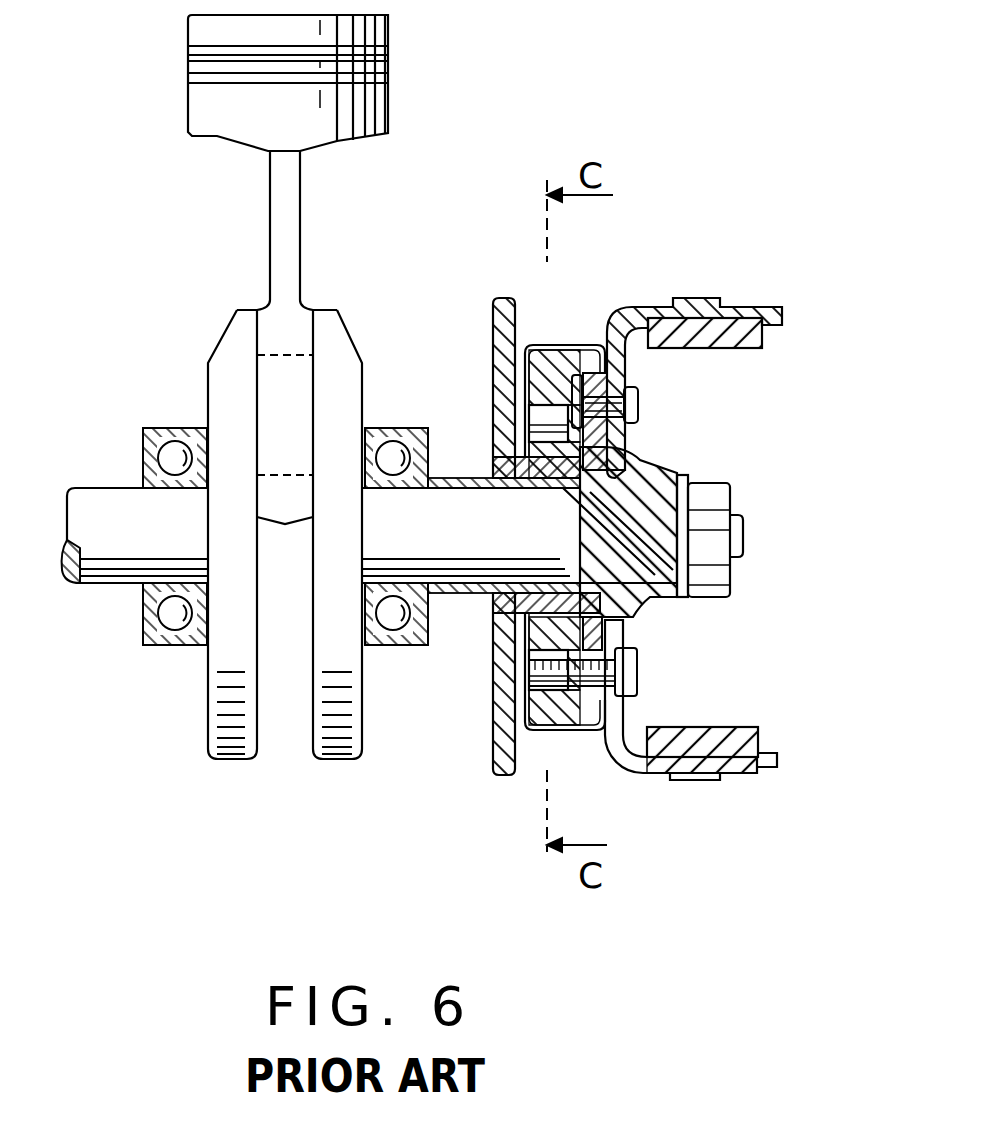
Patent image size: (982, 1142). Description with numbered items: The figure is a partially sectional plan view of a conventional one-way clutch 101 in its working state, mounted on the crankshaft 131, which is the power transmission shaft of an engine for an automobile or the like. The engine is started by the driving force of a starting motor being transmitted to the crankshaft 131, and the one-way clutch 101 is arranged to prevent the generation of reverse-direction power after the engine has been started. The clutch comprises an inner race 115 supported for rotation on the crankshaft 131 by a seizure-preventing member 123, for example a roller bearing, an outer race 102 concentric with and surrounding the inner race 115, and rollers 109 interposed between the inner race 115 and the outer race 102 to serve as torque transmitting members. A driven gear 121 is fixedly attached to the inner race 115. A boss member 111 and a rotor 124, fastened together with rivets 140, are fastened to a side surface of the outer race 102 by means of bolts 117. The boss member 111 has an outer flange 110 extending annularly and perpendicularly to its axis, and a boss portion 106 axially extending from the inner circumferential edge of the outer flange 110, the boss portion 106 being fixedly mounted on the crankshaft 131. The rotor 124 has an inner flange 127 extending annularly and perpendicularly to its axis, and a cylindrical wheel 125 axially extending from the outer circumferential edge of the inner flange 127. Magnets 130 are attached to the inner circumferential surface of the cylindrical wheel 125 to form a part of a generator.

The one-way clutch 101 is at (547, 327).
The outer race 102 is at (607, 370).
The boss portion 106 is at (640, 467).
The rollers 109 is at (537, 418).
The outer flange 110 is at (600, 428).
The boss member 111 is at (585, 372).
The inner race 115 is at (533, 457).
The bolts 117 is at (640, 660).
The driven gear 121 is at (492, 298).
The seizure-preventing member 123 is at (527, 594).
The rotor 124 is at (777, 759).
The cylindrical wheel 125 is at (703, 781).
The inner flange 127 is at (617, 727).
The magnets 130 is at (753, 737).
The crankshaft 131 is at (107, 487).
The rivets 140 is at (640, 397).